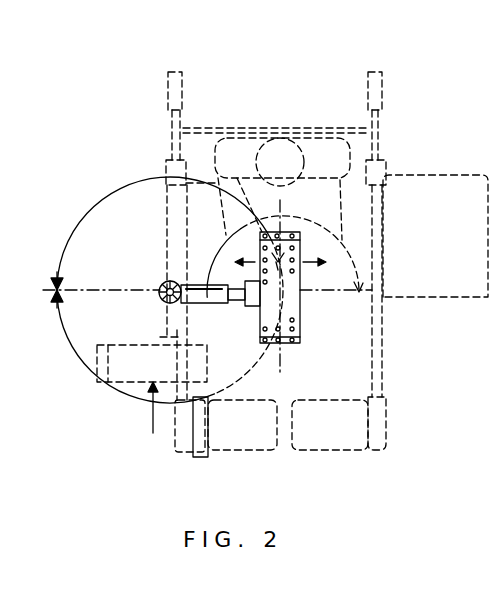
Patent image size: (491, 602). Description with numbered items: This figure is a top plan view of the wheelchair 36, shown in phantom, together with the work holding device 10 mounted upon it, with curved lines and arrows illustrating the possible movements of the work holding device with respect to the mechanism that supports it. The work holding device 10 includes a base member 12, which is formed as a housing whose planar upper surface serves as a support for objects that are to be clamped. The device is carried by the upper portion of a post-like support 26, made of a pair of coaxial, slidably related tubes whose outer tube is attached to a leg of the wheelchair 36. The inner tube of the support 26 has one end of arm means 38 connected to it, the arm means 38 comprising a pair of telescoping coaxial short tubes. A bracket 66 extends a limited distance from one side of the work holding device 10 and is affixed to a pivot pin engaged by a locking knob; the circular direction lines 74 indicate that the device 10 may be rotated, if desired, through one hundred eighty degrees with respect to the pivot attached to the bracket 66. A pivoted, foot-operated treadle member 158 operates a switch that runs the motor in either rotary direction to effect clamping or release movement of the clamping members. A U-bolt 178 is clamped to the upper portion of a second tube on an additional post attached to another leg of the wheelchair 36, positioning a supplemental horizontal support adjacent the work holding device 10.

The work holding device 10 is at (305, 249).
The base member 12 is at (297, 305).
The post-like support 26 is at (156, 297).
The wheelchair 36 is at (163, 170).
The arm means 38 is at (195, 285).
The bracket 66 is at (252, 301).
The circular direction lines 74 is at (345, 250).
The treadle member 158 is at (208, 426).
The U-bolt 178 is at (447, 187).